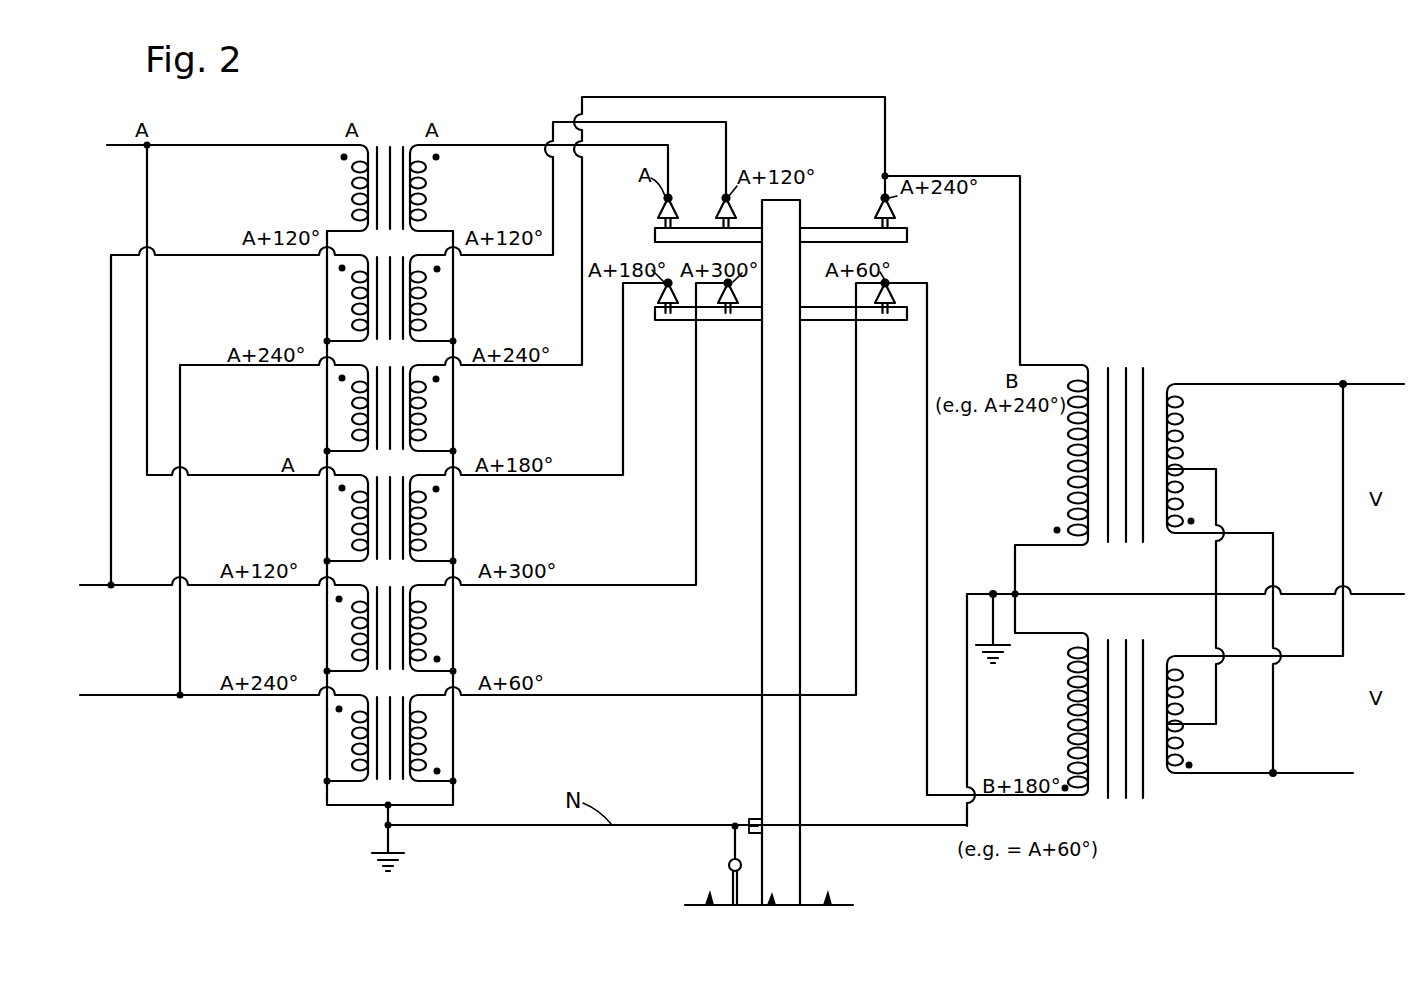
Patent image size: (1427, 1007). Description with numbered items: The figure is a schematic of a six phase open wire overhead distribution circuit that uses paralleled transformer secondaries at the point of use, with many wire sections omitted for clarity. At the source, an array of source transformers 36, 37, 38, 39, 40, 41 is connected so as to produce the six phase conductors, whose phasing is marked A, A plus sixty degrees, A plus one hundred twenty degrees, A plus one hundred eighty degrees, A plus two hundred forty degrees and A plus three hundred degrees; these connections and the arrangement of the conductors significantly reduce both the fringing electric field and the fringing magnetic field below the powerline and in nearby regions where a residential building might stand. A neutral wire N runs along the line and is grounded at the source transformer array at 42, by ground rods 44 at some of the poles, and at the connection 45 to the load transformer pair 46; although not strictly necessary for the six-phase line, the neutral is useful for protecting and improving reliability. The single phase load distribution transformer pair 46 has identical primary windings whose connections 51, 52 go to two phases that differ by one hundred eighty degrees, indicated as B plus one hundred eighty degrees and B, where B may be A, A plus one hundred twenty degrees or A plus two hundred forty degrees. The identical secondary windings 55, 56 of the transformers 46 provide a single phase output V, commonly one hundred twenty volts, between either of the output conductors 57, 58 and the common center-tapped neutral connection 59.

The source transformer 36 is at (340, 746).
The source transformer 37 is at (337, 634).
The source transformer 38 is at (337, 530).
The source transformer 39 is at (337, 420).
The source transformer 40 is at (340, 300).
The source transformer 41 is at (352, 188).
The source transformer array 42 is at (401, 141).
The ground rod 44 is at (728, 864).
The connection 45 is at (1010, 590).
The load transformer pair 46 is at (1158, 351).
The primary winding connection 51 is at (1082, 797).
The primary winding connection 52 is at (1086, 364).
The secondary winding 55 is at (1170, 775).
The secondary winding 56 is at (1183, 427).
The output conductor 57 is at (1394, 383).
The output conductor 58 is at (1331, 774).
The center-tapped neutral connection 59 is at (1377, 593).